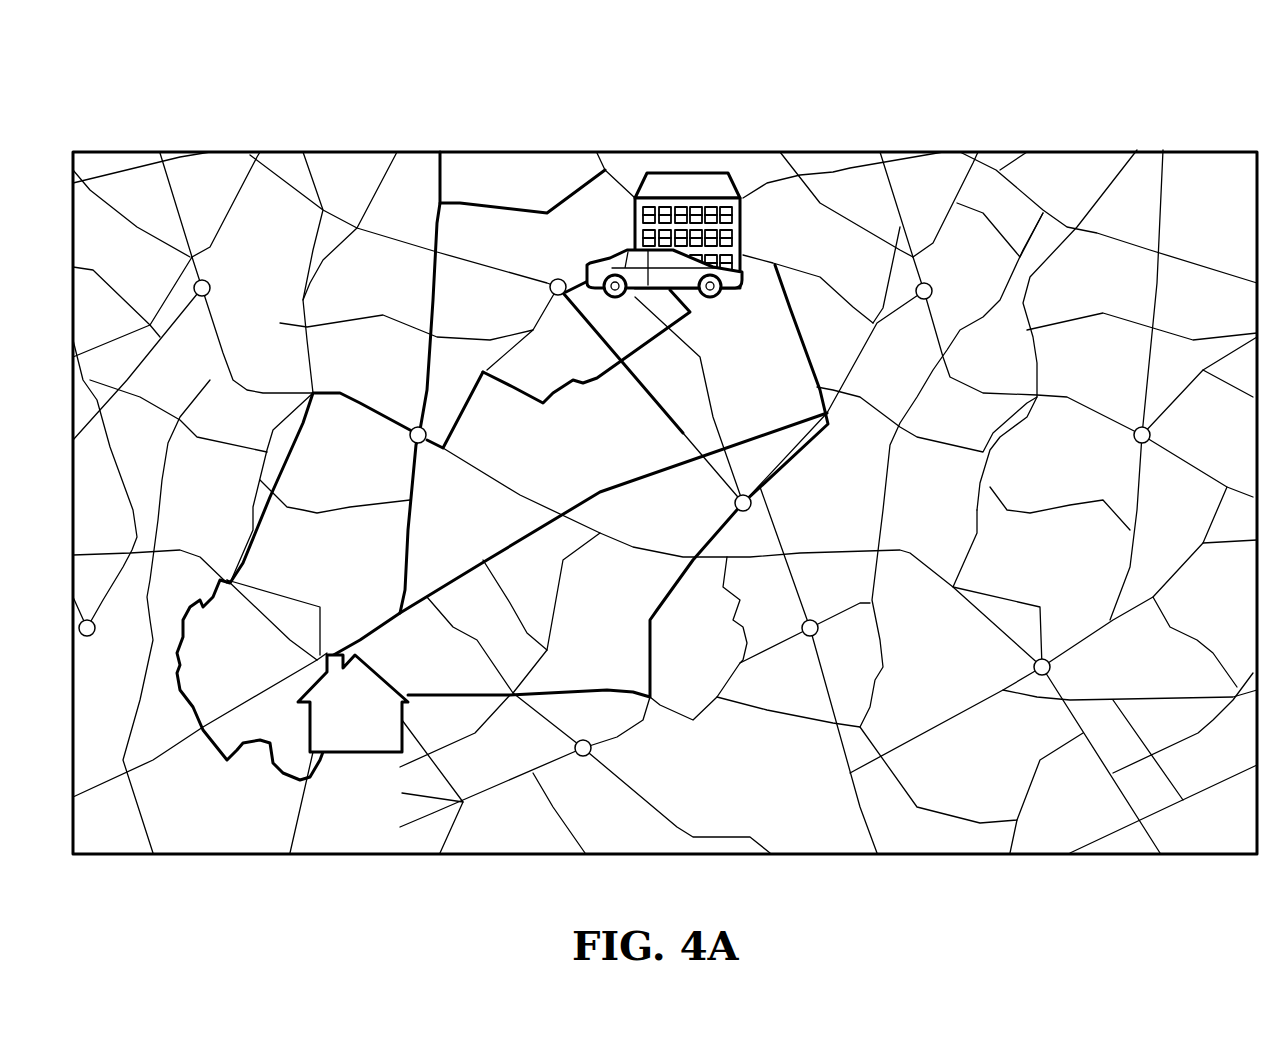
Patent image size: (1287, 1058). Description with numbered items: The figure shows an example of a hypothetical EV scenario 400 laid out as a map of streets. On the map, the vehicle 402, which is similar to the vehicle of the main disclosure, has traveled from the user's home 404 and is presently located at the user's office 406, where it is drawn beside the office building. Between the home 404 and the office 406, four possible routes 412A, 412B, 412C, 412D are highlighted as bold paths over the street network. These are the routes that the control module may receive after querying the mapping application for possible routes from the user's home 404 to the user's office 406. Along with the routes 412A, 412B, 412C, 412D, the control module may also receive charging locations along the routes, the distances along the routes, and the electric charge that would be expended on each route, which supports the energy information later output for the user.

The hypothetical EV scenario 400 is at (1170, 117).
The vehicle 402 is at (605, 245).
The user's home 404 is at (352, 733).
The user's office 406 is at (688, 183).
The route 412A is at (478, 205).
The route 412B is at (358, 403).
The route 412C is at (620, 483).
The route 412D is at (797, 453).